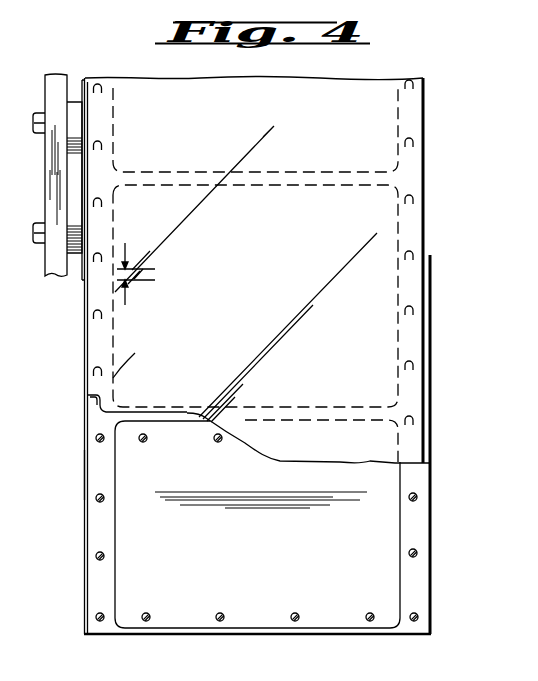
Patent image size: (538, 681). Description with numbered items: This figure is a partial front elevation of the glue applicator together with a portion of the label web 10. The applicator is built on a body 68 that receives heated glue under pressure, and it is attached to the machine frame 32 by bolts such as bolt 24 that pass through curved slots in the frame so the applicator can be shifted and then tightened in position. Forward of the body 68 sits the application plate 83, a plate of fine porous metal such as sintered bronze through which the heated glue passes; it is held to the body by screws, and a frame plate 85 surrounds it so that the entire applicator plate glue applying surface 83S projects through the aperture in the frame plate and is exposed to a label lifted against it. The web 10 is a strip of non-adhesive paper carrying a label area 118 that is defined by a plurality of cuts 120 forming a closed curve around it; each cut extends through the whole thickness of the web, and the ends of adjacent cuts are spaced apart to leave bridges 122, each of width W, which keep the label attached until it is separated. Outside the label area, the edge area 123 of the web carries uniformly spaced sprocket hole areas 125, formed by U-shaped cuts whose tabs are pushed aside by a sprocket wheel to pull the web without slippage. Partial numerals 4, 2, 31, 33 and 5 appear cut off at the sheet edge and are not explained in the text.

The web 10 is at (152, 78).
The sprocket hole area 125 is at (102, 148).
The label area 118 is at (259, 296).
The edge area of web 123 is at (413, 283).
The bridge 122 is at (118, 230).
The bridge width W is at (139, 244).
The cut 120 is at (113, 337).
The applicator body 68 is at (85, 406).
The application plate 83 is at (122, 532).
The applicator plate glue applying surface 83S is at (261, 524).
The frame plate 85 is at (97, 473).
The machine frame 32 is at (43, 79).
The mounting nut 24 is at (34, 135).
The partial numeral 4 is at (6, 287).
The partial numeral 2 is at (4, 316).
The partial numeral 31 is at (11, 360).
The partial numeral 33 is at (11, 396).
The partial numeral 5 is at (2, 496).